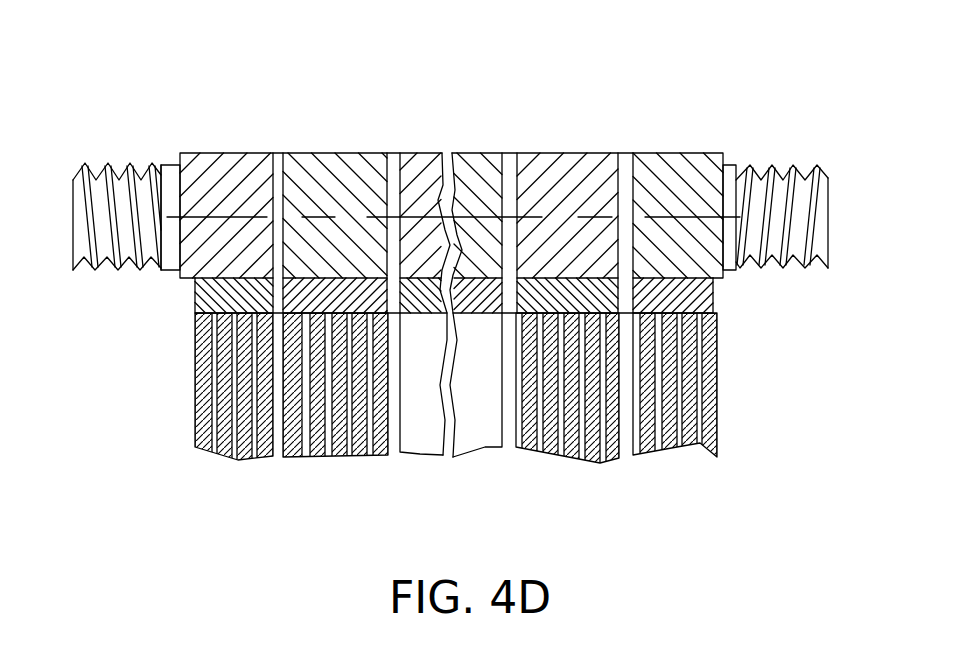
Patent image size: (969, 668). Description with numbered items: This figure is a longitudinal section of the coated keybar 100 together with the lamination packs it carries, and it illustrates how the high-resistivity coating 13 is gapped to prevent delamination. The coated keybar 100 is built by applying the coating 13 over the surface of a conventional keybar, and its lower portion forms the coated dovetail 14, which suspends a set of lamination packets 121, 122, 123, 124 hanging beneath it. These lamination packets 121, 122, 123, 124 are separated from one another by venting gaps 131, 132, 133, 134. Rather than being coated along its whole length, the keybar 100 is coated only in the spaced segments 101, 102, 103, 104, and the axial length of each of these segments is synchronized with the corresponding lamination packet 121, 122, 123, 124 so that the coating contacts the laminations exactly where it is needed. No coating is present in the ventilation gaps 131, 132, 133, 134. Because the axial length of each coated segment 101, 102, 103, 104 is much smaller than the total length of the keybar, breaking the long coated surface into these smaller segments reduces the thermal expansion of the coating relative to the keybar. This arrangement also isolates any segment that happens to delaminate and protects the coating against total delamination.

The high-resistivity coating 13 is at (180, 127).
The coated dovetail 14 is at (193, 300).
The coated keybar 100 is at (748, 299).
The coated segment 101 is at (217, 153).
The coated segment 102 is at (332, 153).
The coated segment 103 is at (565, 153).
The coated segment 104 is at (683, 153).
The lamination packet 121 is at (243, 460).
The lamination packet 122 is at (338, 457).
The lamination packet 123 is at (568, 460).
The lamination packet 124 is at (678, 443).
The venting gap 131 is at (278, 172).
The venting gap 132 is at (393, 167).
The venting gap 133 is at (509, 172).
The venting gap 134 is at (626, 173).